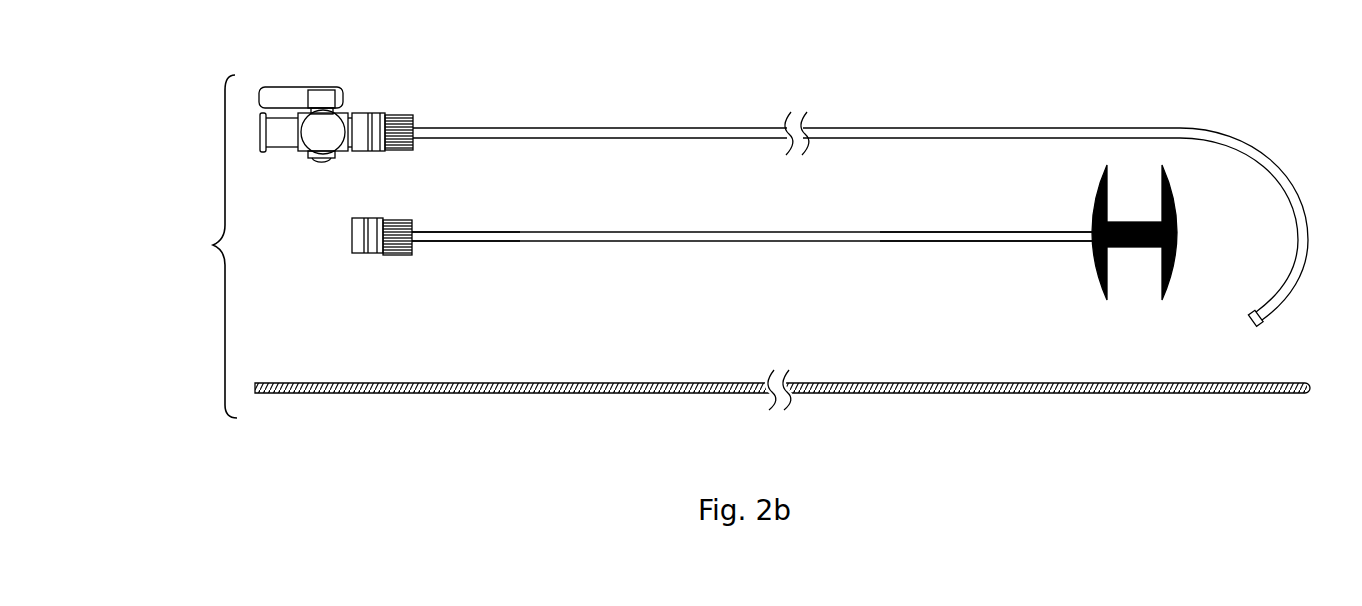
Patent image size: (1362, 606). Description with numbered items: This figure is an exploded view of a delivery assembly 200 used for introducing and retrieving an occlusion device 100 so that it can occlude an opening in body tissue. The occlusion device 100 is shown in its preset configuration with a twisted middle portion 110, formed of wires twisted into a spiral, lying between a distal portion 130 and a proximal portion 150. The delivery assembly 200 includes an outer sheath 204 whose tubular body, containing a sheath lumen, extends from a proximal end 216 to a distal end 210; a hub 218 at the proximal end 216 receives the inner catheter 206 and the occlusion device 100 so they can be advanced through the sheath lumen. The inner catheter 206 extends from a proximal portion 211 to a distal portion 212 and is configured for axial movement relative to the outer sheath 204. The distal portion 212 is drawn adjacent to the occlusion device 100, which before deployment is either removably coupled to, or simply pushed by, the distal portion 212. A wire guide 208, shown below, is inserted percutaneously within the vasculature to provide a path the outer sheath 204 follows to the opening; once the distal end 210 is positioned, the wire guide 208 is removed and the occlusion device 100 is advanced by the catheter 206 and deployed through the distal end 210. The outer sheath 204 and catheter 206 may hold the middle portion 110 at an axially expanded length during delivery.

The delivery assembly 200 is at (320, 50).
The outer sheath 204 is at (612, 129).
The inner catheter 206 is at (570, 232).
The wire guide 208 is at (360, 383).
The distal end 210 is at (1252, 324).
The proximal portion 211 is at (485, 241).
The distal portion 212 is at (905, 232).
The proximal end 216 is at (415, 128).
The hub 218 is at (333, 137).
The occlusion device 100 is at (1137, 227).
The middle portion 110 is at (1145, 222).
The distal portion 130 is at (1093, 262).
The proximal portion 150 is at (1179, 262).